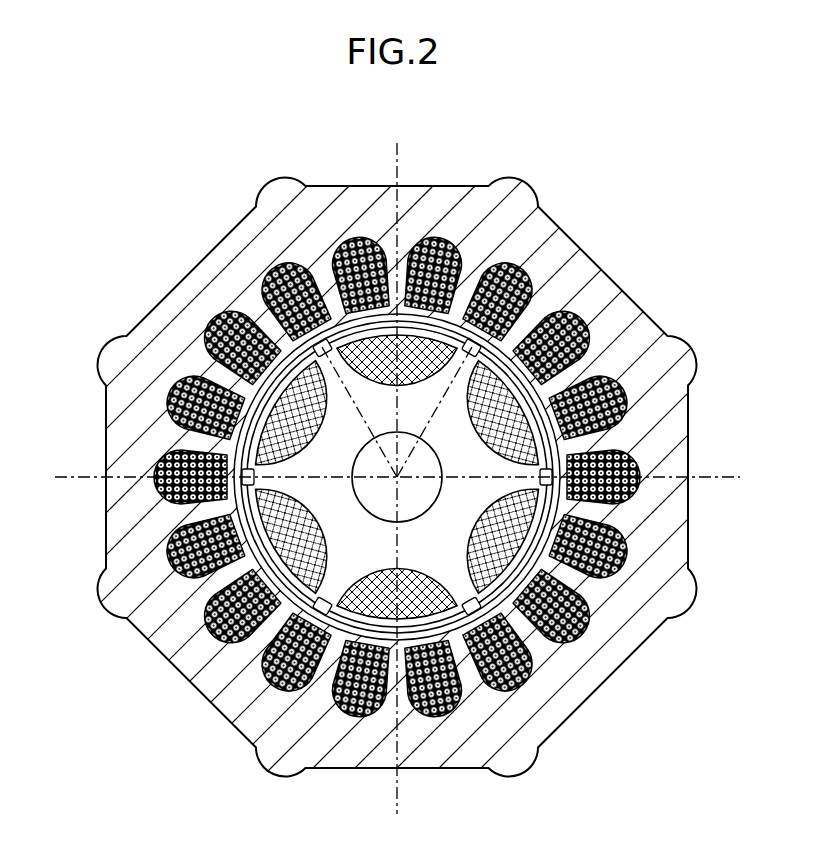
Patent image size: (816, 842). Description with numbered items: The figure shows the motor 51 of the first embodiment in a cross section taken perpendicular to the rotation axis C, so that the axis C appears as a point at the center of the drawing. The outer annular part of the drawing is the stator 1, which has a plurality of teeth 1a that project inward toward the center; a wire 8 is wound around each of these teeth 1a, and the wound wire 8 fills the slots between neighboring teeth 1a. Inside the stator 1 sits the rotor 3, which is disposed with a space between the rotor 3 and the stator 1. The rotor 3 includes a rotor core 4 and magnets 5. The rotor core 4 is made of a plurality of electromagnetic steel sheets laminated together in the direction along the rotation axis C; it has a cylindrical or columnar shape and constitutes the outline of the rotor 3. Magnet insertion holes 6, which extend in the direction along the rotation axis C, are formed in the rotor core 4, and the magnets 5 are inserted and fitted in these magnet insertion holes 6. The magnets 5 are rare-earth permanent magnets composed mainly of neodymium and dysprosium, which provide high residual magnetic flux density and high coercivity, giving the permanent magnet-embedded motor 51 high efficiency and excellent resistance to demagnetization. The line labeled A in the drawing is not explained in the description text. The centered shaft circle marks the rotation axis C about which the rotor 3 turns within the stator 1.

The stator 1 is at (588, 270).
The teeth 1a is at (333, 307).
The rotor 3 is at (548, 386).
The rotor core 4 is at (469, 456).
The magnets 5 is at (379, 358).
The magnet insertion holes 6 is at (427, 347).
The wire 8 is at (228, 345).
The motor 51 is at (627, 182).
The tooth center line A is at (453, 325).
The rotation axis C is at (292, 598).